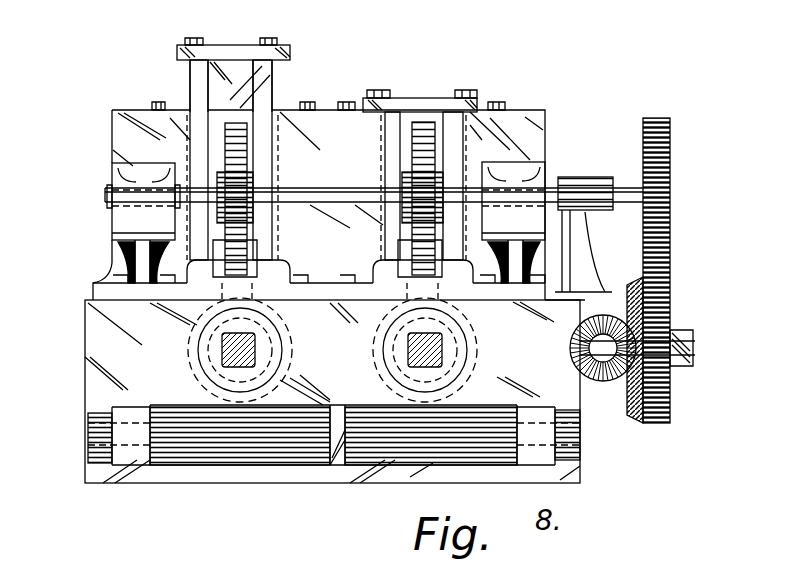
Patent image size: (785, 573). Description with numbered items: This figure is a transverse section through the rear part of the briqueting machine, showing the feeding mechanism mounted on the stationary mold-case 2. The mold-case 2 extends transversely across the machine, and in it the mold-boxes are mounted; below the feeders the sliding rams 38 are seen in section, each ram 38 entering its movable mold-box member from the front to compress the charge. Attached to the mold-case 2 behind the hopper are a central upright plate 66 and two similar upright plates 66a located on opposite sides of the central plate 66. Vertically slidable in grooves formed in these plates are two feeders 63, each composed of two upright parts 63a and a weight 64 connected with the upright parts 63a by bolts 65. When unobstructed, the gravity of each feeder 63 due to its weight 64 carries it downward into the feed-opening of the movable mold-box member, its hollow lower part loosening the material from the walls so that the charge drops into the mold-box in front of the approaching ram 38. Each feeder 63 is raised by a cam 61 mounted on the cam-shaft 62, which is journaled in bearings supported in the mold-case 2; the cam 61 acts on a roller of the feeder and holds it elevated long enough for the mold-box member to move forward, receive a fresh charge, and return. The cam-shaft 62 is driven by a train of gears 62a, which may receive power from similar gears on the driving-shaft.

The mold-case 2 is at (332, 391).
The ram 38 is at (222, 345).
The cam 61 is at (242, 153).
The cam-shaft 62 is at (625, 178).
The train of gears 62a is at (632, 321).
The feeder 63 is at (227, 110).
The upright part 63a is at (335, 25).
The weight 64 is at (235, 55).
The bolt 65 is at (190, 45).
The upright plate 66 is at (368, 181).
The upright plate 66a is at (543, 92).